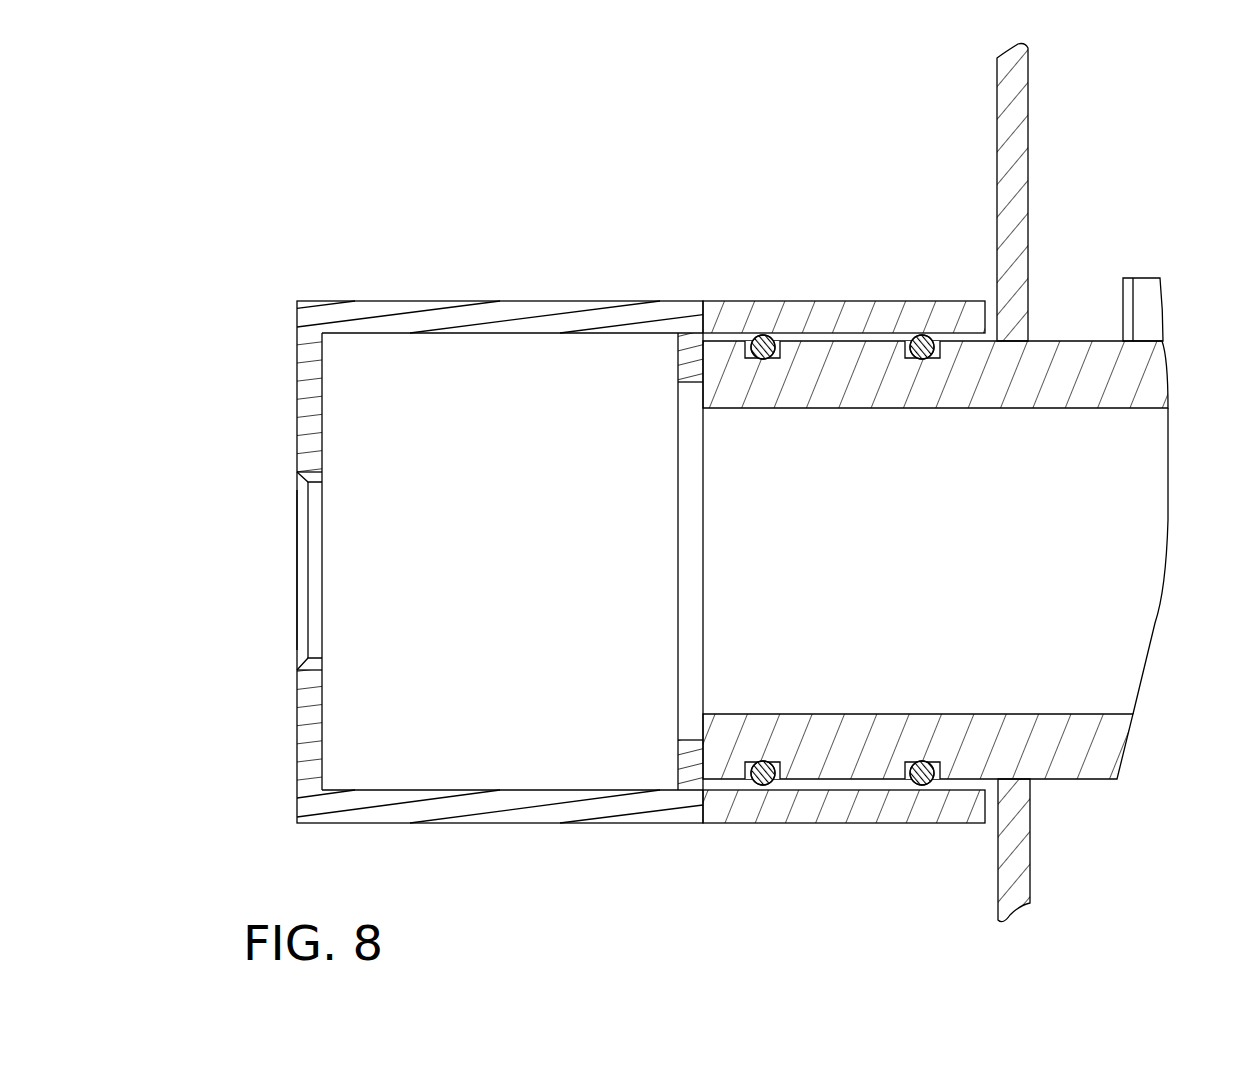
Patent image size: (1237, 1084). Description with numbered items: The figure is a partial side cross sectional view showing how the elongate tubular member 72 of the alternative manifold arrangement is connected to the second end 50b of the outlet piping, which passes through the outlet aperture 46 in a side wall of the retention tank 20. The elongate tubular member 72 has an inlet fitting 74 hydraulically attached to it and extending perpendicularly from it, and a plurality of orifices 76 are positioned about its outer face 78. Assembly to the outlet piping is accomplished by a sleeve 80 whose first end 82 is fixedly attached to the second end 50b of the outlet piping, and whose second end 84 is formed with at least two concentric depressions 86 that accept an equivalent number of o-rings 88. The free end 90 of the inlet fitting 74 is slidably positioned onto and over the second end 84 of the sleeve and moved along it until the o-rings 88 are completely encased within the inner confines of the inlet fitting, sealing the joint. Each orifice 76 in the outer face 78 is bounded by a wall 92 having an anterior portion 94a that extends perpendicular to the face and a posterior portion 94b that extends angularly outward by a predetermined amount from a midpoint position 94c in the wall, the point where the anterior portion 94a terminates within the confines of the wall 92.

The retention tank 20 is at (997, 137).
The outlet aperture 46 is at (1030, 783).
The second end of the outlet piping 50b is at (1145, 278).
The elongate tubular member 72 is at (501, 300).
The inlet fitting 74 is at (765, 823).
The orifices 76 is at (323, 509).
The outer face 78 is at (297, 713).
The sleeve 80 is at (1102, 340).
The first end of the sleeve 82 is at (1166, 340).
The second end of the sleeve 84 is at (851, 337).
The concentric depressions 86 is at (788, 340).
The o-rings 88 is at (912, 817).
The free end of the inlet fitting 90 is at (938, 823).
The wall of the orifice 92 is at (323, 574).
The anterior portion 94a is at (323, 658).
The posterior portion 94b is at (297, 482).
The midpoint position 94c is at (308, 615).